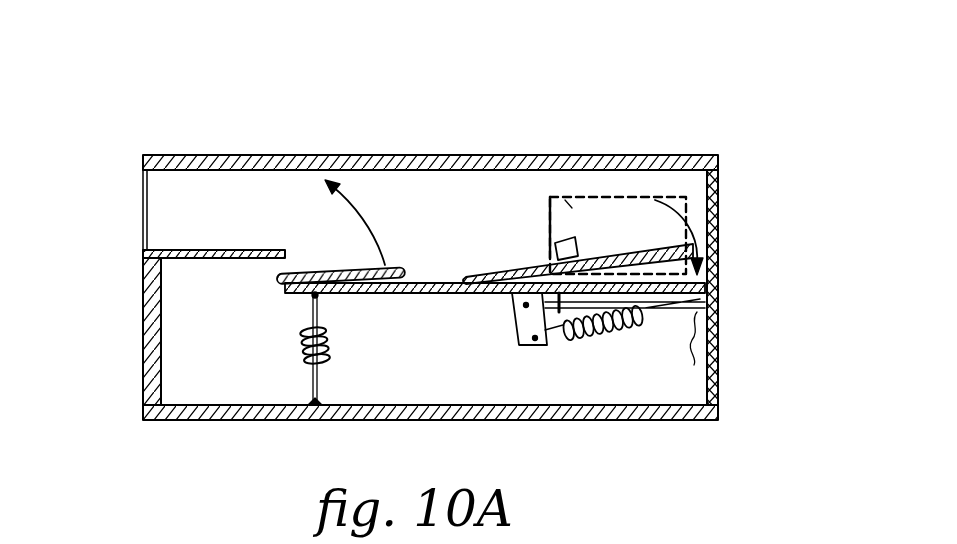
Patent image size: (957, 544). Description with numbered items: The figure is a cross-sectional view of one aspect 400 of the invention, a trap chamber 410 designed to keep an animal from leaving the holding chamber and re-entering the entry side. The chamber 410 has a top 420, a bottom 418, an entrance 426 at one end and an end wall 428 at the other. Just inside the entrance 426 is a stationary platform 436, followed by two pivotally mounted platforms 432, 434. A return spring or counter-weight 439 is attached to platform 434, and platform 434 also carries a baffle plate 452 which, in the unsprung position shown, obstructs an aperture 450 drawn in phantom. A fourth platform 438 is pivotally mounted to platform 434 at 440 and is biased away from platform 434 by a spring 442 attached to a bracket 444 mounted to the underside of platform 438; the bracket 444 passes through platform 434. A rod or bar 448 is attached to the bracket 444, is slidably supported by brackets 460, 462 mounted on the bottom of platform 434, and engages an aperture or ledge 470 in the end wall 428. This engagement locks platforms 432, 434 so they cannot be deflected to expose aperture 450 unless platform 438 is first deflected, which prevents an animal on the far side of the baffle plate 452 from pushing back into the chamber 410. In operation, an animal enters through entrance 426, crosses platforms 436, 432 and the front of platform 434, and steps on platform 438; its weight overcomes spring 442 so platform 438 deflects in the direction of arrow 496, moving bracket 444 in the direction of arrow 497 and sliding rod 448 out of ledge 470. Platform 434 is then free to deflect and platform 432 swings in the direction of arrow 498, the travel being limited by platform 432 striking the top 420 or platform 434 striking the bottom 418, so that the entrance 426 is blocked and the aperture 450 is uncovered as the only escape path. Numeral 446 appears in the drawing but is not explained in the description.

The aspect of the invention 400 is at (124, 110).
The chamber 410 is at (468, 155).
The bottom 418 is at (250, 420).
The top 420 is at (272, 155).
The entrance 426 is at (143, 213).
The end wall 428 is at (720, 267).
The pivotally mounted platform 432 is at (330, 273).
The pivotally mounted platform 434 is at (432, 282).
The stationary platform 436 is at (262, 250).
The fourth platform 438 is at (607, 249).
The return spring or counter-weight 439 is at (298, 348).
The pivotal mounting 440 is at (452, 292).
The spring 442 is at (488, 372).
The bracket 444 is at (512, 338).
The leader to sensor area 446 is at (558, 236).
The rod or bar 448 is at (697, 315).
The aperture 450 is at (570, 197).
The baffle plate 452 is at (633, 197).
The bracket 460 is at (513, 320).
The bracket 462 is at (703, 368).
The aperture or ledge 470 is at (706, 305).
The arrow 496 is at (718, 222).
The arrow 497 is at (538, 378).
The arrow 498 is at (372, 212).